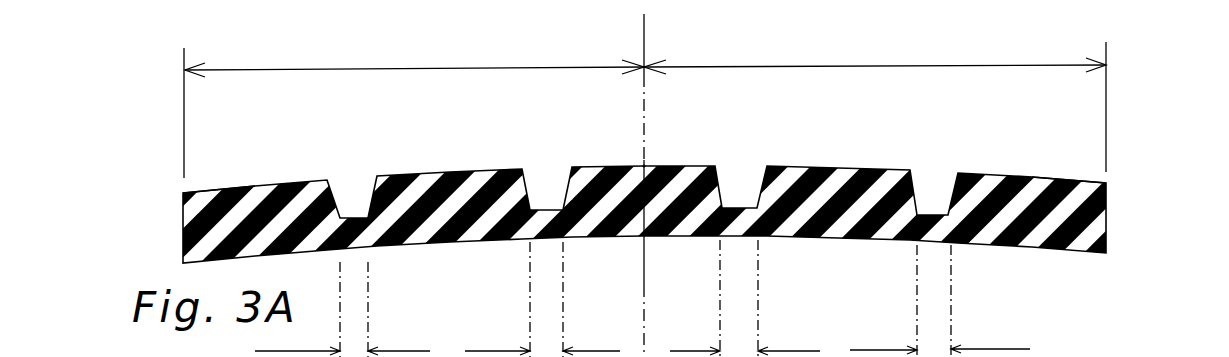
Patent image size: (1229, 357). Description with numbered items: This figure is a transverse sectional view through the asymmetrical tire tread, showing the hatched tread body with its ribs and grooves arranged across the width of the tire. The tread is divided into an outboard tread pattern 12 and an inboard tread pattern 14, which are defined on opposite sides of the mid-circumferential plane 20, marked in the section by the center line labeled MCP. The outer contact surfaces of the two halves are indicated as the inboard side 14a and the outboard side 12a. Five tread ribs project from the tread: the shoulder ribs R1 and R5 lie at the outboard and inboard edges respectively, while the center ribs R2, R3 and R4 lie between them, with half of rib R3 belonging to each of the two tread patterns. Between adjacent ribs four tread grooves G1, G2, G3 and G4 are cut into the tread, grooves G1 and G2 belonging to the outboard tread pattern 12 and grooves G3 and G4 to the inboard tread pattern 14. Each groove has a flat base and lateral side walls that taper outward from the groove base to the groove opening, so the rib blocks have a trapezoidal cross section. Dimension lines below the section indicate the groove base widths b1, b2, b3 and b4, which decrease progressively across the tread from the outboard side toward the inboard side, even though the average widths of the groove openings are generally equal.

The outboard tread pattern 12 is at (875, 57).
The inboard tread pattern 14 is at (414, 59).
The mid-circumferential plane 20 is at (646, 36).
The mid-circumferential plane MCP is at (645, 130).
The inboard side 14a is at (238, 168).
The outer tread surface of second half 12a is at (1072, 156).
The tread groove G1 is at (939, 185).
The tread groove G2 is at (750, 177).
The tread groove G3 is at (547, 181).
The tread groove G4 is at (367, 184).
The shoulder rib R1 is at (1026, 200).
The center rib R2 is at (887, 183).
The center rib R3 is at (690, 177).
The center rib R4 is at (474, 190).
The shoulder rib R5 is at (263, 197).
The groove base width b1 is at (940, 301).
The groove base width b2 is at (745, 298).
The groove base width b3 is at (542, 299).
The groove base width b4 is at (342, 309).